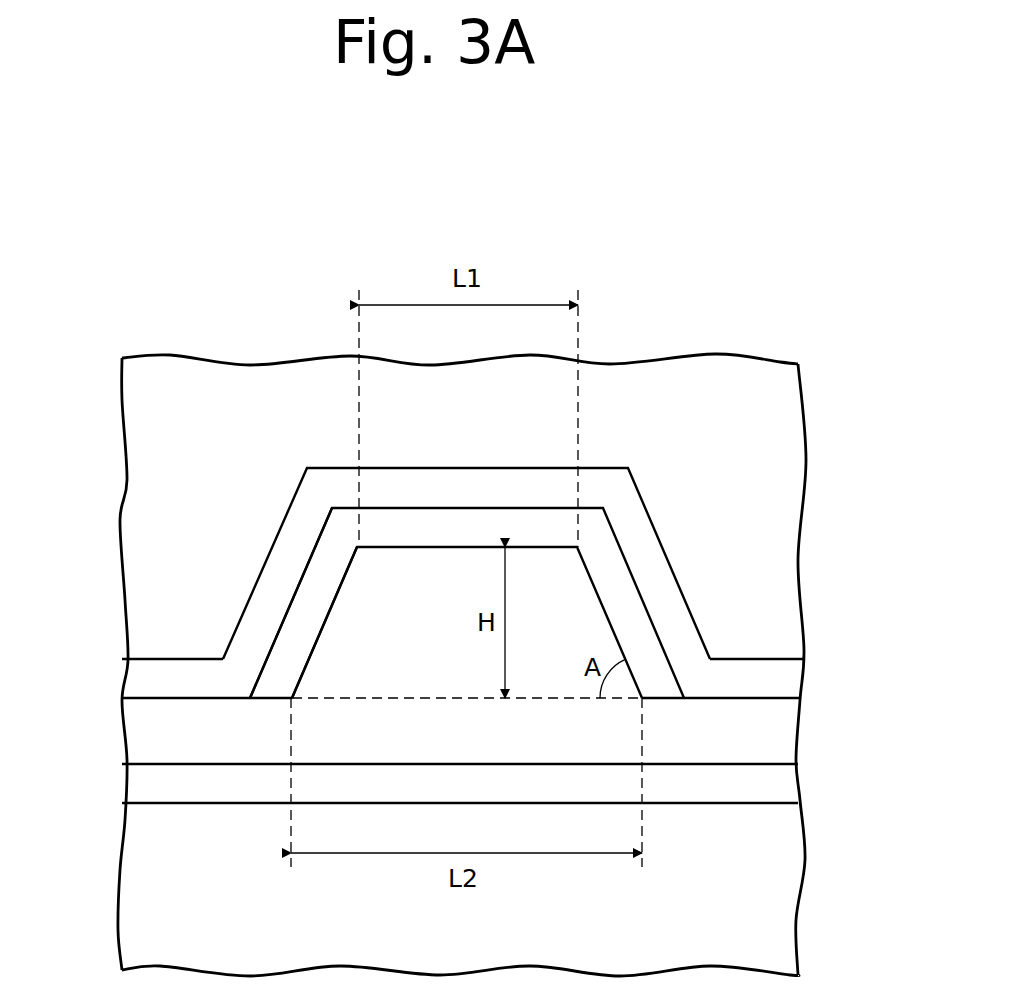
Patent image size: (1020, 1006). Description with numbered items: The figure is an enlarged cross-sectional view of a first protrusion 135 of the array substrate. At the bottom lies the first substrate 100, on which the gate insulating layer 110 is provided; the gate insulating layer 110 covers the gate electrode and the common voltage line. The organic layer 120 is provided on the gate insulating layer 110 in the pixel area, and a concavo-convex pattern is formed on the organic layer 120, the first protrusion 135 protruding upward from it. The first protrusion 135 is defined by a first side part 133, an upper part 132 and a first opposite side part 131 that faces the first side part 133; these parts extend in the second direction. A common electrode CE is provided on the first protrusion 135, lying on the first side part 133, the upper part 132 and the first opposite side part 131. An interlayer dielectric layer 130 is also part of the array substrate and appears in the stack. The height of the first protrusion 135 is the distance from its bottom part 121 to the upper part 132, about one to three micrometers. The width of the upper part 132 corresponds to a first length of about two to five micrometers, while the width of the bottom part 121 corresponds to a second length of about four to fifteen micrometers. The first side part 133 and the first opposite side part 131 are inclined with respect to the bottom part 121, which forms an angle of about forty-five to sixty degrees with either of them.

The first substrate 100 is at (783, 897).
The gate insulating layer 110 is at (783, 787).
The organic layer 120 is at (783, 733).
The bottom part 121 is at (372, 698).
The interlayer dielectric layer 130 is at (783, 682).
The first opposite side part 131 is at (330, 620).
The upper part 132 is at (413, 547).
The first side part 133 is at (608, 618).
The first protrusion 135 is at (553, 585).
The common electrode CE is at (328, 558).